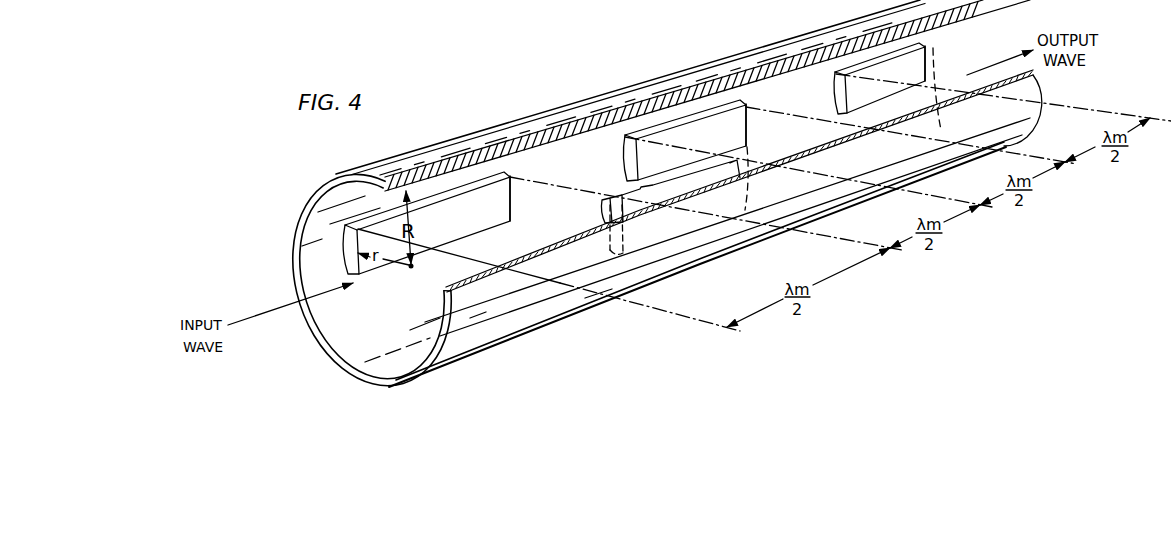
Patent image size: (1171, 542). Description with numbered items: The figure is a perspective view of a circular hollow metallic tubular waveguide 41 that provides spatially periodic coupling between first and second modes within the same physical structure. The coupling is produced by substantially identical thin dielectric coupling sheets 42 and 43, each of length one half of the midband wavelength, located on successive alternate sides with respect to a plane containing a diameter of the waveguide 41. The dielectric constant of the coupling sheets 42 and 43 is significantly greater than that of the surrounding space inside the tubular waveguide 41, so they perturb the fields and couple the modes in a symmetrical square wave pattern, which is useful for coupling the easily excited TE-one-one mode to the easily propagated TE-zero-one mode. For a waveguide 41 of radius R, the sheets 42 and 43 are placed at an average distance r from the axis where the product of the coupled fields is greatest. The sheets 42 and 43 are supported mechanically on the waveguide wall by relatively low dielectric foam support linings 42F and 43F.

The circular hollow metallic tubular waveguide 41 is at (335, 350).
The dielectric coupling sheet 42 is at (467, 222).
The foam support lining 42F is at (510, 174).
The dielectric coupling sheet 43 is at (605, 216).
The foam support lining 43F is at (637, 192).